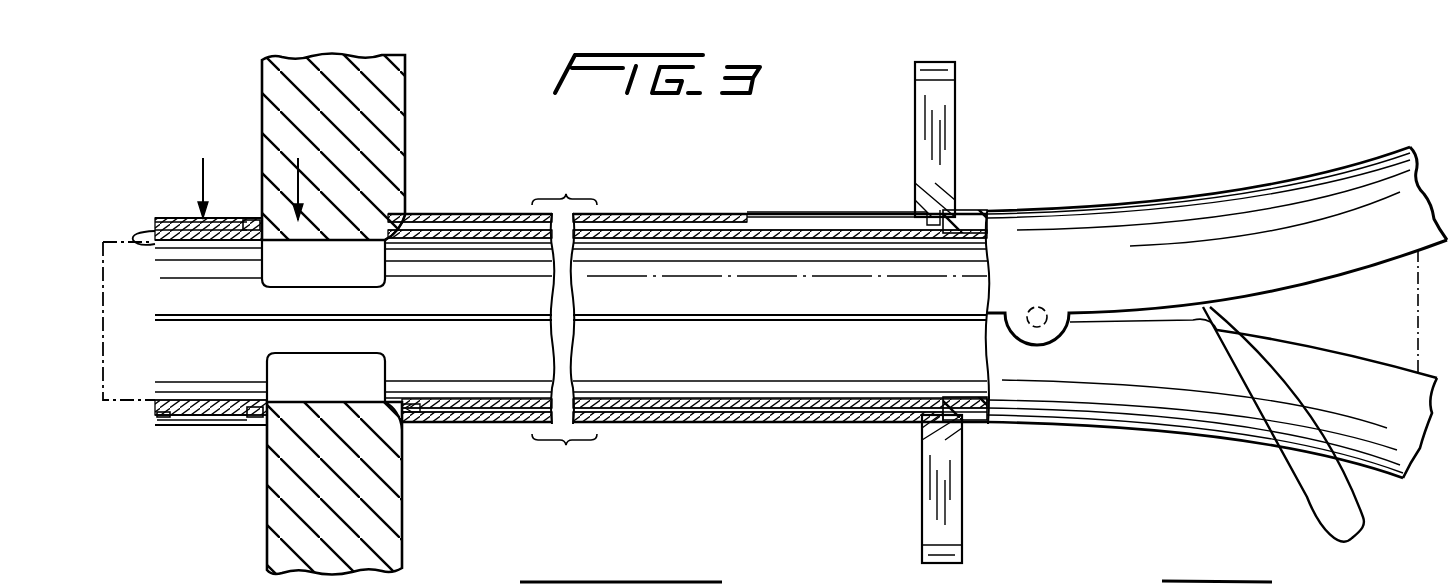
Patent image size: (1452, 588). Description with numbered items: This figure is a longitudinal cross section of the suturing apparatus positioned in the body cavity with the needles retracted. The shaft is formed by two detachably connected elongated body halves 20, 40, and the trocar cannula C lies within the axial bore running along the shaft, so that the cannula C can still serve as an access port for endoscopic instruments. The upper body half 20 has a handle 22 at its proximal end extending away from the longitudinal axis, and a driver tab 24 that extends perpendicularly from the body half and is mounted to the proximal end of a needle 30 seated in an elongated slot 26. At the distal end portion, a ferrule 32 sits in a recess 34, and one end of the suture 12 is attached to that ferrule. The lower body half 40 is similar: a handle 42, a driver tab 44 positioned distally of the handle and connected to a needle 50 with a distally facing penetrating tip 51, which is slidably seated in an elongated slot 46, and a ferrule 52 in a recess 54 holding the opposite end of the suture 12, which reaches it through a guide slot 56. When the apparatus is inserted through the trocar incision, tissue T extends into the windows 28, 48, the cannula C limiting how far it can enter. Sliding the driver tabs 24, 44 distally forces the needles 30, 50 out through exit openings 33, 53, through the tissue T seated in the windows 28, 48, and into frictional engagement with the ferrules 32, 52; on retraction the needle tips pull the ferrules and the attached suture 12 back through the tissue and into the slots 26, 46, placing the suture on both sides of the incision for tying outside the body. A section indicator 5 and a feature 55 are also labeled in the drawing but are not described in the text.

The suture 12 is at (145, 225).
The section line 5- 5 is at (248, 189).
The body half 20 is at (700, 270).
The handle 22 is at (1233, 195).
The driver tab 24 is at (920, 143).
The elongated slot 26 is at (408, 228).
The window 28 is at (393, 260).
The needle 30 is at (505, 213).
The ferrule 32 is at (253, 220).
The exit opening 33 is at (405, 215).
The recess 34 is at (237, 217).
The body half 40 is at (745, 355).
The handle 42 is at (1125, 400).
The driver tab 44 is at (955, 517).
The elongated slot 46 is at (410, 410).
The window 48 is at (368, 402).
The needle 50 is at (497, 412).
The penetrating tip 51 is at (410, 410).
The ferrule 52 is at (255, 428).
The exit opening 53 is at (390, 405).
The recess 54 is at (235, 428).
The hole 55 is at (1040, 305).
The guide slot 56 is at (172, 425).
The tissue T is at (395, 85).
The trocar cannula C is at (127, 385).